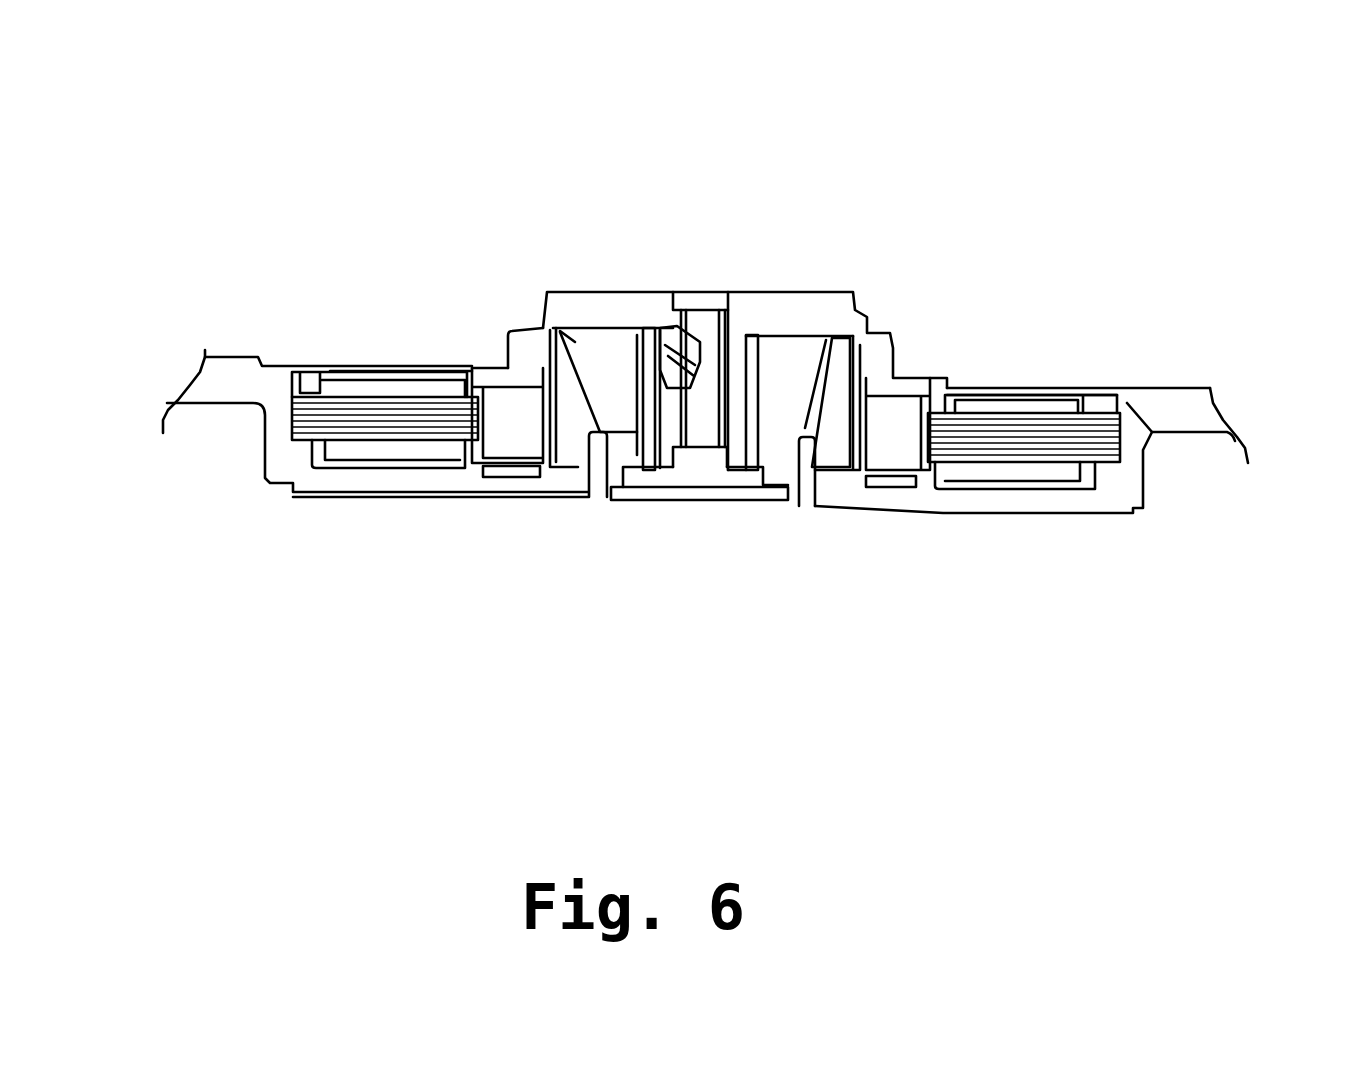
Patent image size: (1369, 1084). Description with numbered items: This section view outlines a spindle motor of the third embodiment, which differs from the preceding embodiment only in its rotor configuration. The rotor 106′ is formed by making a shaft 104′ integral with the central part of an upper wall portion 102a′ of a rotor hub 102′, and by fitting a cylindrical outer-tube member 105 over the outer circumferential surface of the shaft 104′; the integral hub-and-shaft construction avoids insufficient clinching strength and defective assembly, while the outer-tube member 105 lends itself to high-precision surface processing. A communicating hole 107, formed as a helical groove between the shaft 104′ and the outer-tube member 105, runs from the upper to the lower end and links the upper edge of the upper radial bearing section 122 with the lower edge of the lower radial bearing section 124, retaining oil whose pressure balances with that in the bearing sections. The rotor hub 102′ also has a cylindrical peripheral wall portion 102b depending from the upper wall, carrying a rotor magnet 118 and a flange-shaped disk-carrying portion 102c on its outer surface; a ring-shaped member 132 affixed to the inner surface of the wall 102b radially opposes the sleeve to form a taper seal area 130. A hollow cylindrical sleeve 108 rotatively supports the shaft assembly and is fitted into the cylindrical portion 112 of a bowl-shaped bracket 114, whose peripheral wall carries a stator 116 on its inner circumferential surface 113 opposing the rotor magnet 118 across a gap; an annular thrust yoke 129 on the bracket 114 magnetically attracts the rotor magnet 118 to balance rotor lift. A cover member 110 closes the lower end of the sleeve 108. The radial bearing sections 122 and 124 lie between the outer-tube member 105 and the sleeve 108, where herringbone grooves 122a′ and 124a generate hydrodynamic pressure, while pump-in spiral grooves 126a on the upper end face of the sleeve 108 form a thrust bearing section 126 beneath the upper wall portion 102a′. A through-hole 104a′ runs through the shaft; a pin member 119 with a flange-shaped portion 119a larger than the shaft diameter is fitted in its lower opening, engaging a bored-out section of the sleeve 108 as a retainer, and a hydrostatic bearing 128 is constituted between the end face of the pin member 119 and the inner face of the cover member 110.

The rotor hub 102′ is at (872, 316).
The upper wall portion 102a′ is at (592, 335).
The cylindrical peripheral wall portion 102b is at (860, 438).
The disk-carrying portion 102c is at (883, 360).
The shaft 104′ is at (752, 368).
The shaft thrust piece 104a′ is at (710, 335).
The outer-tube member 105 is at (610, 303).
The bearing sleeve 106′ is at (733, 362).
The communicating hole 107 is at (641, 345).
The sleeve 108 is at (532, 323).
The cover member 110 is at (745, 502).
The cylindrical portion 112 is at (598, 450).
The inner circumferential surface 113 is at (1118, 408).
The bracket 114 is at (293, 453).
The stator 116 is at (378, 387).
The rotor magnet 118 is at (513, 427).
The pin member 119 is at (698, 460).
The flange-shaped portion 119a is at (635, 477).
The upper radial bearing section 122 is at (800, 378).
The magnet 122a′ is at (838, 342).
The lower radial bearing section 124 is at (763, 460).
The herringbone grooves 124a is at (803, 468).
The thrust bearing section 126 is at (600, 345).
The pump-in spiral grooves 126a is at (575, 328).
The hydrostatic bearing 128 is at (705, 503).
The thrust yoke 129 is at (498, 473).
The taper seal area 130 is at (580, 405).
The ring-shaped member 132 is at (943, 387).